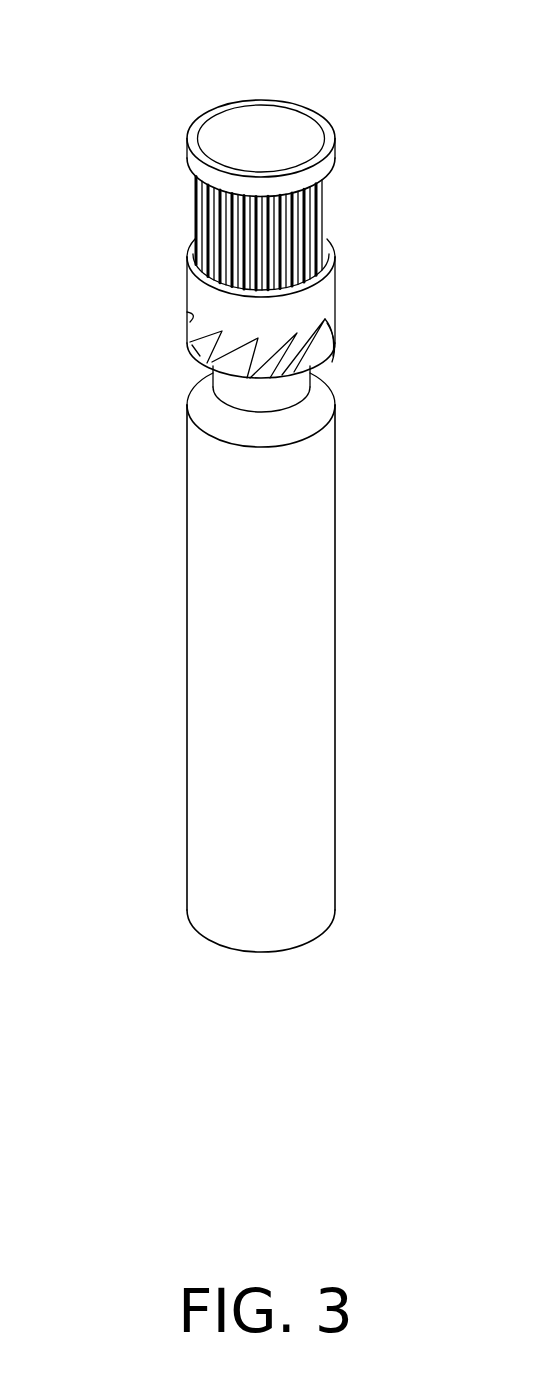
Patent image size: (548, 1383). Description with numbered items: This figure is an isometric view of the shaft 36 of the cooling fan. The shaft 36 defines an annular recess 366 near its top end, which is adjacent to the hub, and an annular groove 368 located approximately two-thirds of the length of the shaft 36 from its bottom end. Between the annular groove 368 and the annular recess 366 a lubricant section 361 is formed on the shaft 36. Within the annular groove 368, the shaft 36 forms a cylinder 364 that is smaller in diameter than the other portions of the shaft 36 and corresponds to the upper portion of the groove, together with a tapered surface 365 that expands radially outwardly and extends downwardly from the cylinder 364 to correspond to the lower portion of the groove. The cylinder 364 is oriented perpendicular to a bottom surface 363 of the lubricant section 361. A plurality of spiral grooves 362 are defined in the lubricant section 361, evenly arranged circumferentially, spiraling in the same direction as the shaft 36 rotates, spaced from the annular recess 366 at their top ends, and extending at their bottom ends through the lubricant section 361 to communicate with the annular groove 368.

The shaft 36 is at (179, 81).
The lubricant section 361 is at (323, 297).
The spiral grooves 362 is at (330, 350).
The bottom surface 363 is at (195, 362).
The cylinder 364 is at (292, 387).
The tapered surface 365 is at (305, 427).
The annular recess 366 is at (328, 205).
The annular groove 368 is at (197, 372).